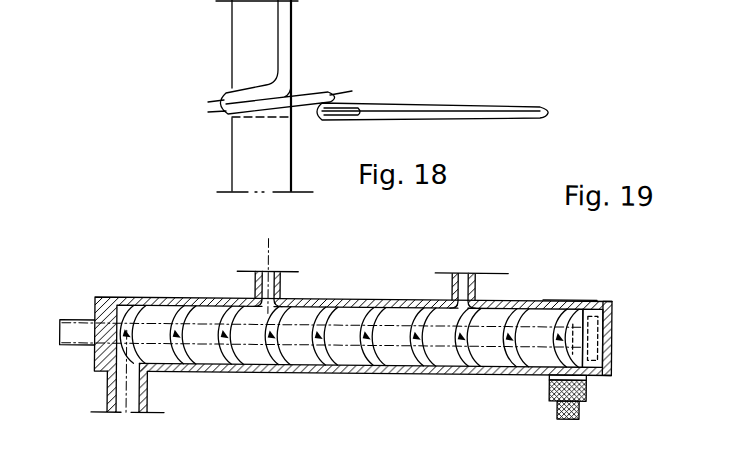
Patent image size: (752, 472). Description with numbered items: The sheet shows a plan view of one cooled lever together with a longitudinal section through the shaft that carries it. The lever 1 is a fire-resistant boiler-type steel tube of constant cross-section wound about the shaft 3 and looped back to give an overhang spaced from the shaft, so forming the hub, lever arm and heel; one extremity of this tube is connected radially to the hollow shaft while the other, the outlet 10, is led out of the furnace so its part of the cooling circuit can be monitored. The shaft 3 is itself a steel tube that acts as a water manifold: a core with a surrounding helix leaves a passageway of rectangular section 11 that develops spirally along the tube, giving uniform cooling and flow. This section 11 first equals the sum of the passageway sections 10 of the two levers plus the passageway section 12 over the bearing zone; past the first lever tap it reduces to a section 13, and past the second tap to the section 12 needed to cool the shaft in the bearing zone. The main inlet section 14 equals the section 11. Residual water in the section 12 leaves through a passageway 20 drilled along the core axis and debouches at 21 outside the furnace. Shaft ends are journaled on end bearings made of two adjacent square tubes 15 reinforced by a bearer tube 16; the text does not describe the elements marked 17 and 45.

In FIG. 18, the lever 1 is at (490, 108).
In FIG. 18, the shaft 3 is at (247, 165).
In FIG. 19, the shaft 3 is at (400, 363).
In FIG. 19, the outlet 10 is at (270, 270).
In FIG. 19, the passageway of rectangular section 11 is at (143, 331).
In FIG. 19, the passageway section 12 is at (547, 294).
In FIG. 19, the section 13 is at (350, 298).
In FIG. 19, the main inlet section 14 is at (127, 428).
In FIG. 19, the square tubes 15 is at (588, 391).
In FIG. 19, the bearer tube 16 is at (558, 409).
In FIG. 19, the end cap 17 is at (593, 296).
In FIG. 19, the passageway 20 is at (590, 329).
In FIG. 19, the residual water outlet 21 is at (47, 333).
In FIG. 19, the gasket 45 is at (555, 381).